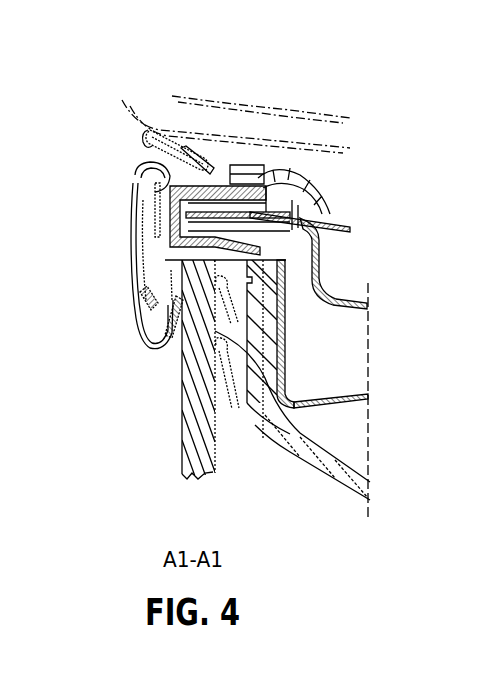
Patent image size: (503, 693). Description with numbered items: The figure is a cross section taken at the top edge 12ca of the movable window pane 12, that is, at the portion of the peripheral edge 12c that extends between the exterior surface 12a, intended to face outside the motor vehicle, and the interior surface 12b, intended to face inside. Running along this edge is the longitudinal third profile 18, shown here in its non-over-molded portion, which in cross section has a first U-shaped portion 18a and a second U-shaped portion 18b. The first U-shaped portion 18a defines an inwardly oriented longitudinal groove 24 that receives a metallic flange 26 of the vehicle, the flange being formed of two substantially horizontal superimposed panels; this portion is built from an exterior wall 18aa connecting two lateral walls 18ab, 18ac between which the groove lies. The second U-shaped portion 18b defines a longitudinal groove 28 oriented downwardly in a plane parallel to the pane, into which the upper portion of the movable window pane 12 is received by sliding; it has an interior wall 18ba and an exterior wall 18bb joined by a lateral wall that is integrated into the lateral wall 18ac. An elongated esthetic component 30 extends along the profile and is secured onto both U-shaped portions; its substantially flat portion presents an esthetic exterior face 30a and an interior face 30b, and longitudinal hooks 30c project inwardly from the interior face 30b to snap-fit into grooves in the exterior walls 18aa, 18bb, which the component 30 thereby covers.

The movable window pane 12 is at (176, 453).
The exterior surface 12a is at (178, 400).
The interior surface 12b is at (220, 458).
The peripheral edge 12c is at (133, 262).
The top edge 12ca is at (227, 373).
The third profile 18 is at (132, 143).
The first U-shaped portion 18a is at (217, 148).
The exterior wall 18aa is at (132, 197).
The lateral wall 18ab is at (236, 165).
The lateral wall 18ac is at (195, 160).
The second U-shaped portion 18b is at (277, 319).
The interior wall 18ba is at (287, 312).
The exterior wall 18bb is at (160, 325).
The longitudinal groove 24 is at (258, 205).
The metallic flange 26 is at (314, 233).
The longitudinal groove 28 is at (288, 383).
The esthetic component 30 is at (132, 237).
The esthetic exterior face 30a is at (130, 212).
The interior face 30b is at (135, 275).
The longitudinal hooks 30c is at (142, 146).